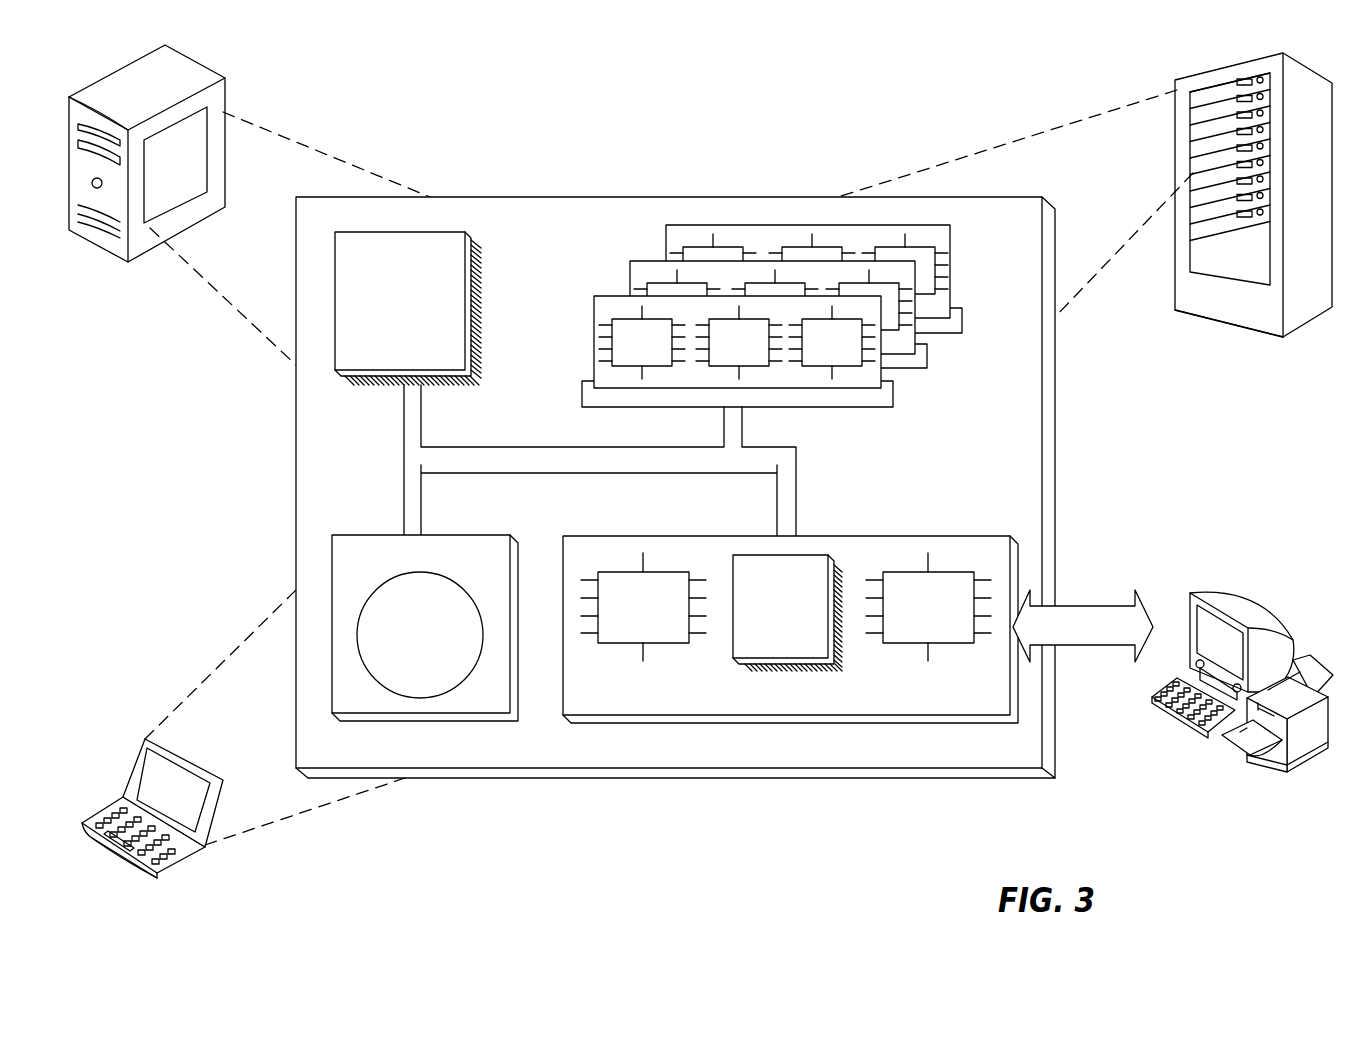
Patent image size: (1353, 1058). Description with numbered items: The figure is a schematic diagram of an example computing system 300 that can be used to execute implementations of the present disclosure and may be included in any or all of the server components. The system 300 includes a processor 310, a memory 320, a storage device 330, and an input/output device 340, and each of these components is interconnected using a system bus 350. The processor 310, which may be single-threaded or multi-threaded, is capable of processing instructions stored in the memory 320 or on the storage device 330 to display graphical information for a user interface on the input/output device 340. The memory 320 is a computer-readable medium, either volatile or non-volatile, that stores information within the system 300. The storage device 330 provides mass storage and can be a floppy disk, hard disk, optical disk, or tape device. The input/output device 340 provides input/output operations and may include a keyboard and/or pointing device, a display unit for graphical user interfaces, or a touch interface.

The computing system 300 is at (496, 112).
The processor 310 is at (455, 362).
The memory 320 is at (959, 372).
The storage device 330 is at (500, 706).
The input/output device 340 is at (1185, 600).
The system bus 350 is at (595, 463).